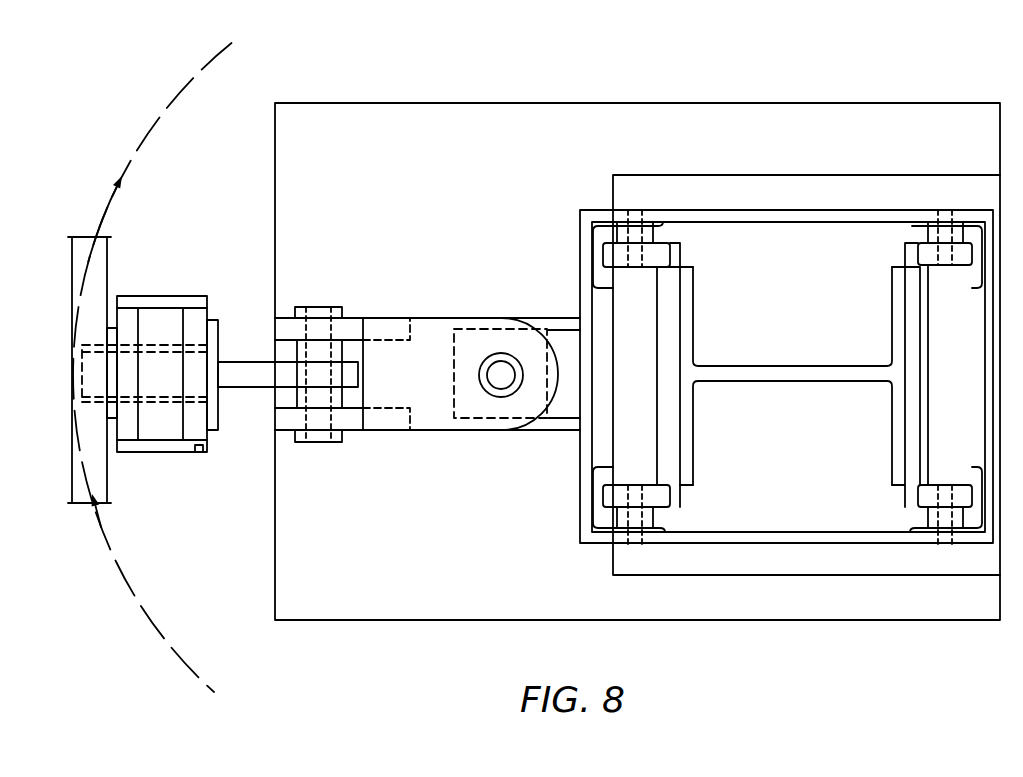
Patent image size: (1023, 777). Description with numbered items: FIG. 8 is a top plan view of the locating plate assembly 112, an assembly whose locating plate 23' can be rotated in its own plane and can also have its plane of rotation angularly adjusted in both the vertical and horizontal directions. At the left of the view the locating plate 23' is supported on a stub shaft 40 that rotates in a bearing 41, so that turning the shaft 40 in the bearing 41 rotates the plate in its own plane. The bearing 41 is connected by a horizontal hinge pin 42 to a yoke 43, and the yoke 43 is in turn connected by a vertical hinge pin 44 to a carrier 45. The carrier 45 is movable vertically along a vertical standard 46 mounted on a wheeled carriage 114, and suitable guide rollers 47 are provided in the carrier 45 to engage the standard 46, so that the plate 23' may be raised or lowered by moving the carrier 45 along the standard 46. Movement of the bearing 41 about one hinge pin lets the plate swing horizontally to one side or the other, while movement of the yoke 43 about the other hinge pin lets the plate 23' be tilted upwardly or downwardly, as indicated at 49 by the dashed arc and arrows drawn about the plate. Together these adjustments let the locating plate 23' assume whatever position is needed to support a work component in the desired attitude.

The locating plate assembly 112 is at (760, 98).
The wheeled carriage 114 is at (620, 103).
The locating plate 23' is at (65, 370).
The stub shaft 40 is at (155, 345).
The bearing 41 is at (197, 452).
The horizontal hinge pin 42 is at (325, 307).
The yoke 43 is at (437, 318).
The vertical hinge pin 44 is at (501, 383).
The carrier 45 is at (580, 523).
The vertical standard 46 is at (897, 483).
The guide rollers 47 is at (662, 497).
The tilting movement 49 is at (96, 236).